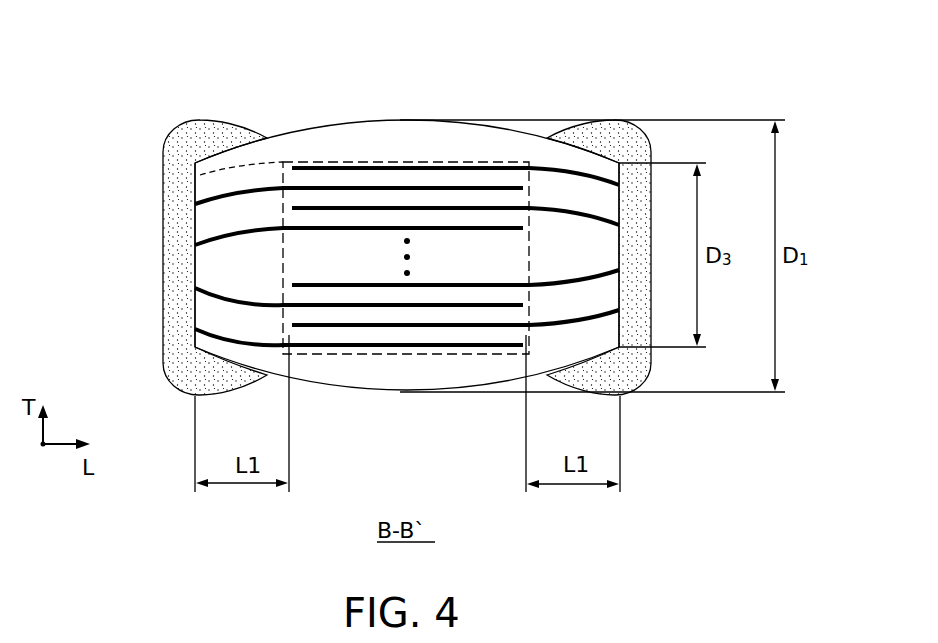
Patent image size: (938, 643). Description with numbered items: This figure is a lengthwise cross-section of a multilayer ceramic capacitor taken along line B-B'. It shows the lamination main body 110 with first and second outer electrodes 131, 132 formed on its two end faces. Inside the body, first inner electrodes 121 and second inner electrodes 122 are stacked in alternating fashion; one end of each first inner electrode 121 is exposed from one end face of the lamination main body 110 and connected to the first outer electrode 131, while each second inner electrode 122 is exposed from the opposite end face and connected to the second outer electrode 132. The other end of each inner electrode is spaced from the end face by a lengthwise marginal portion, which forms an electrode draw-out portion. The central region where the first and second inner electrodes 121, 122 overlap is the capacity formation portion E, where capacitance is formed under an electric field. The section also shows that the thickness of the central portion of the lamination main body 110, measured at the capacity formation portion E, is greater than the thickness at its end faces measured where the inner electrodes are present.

The lamination main body 110 is at (409, 120).
The first inner electrode 121 is at (313, 167).
The second inner electrode 122 is at (513, 163).
The first outer electrode 131 is at (205, 140).
The second outer electrode 132 is at (618, 137).
The capacity formation portion E is at (200, 175).